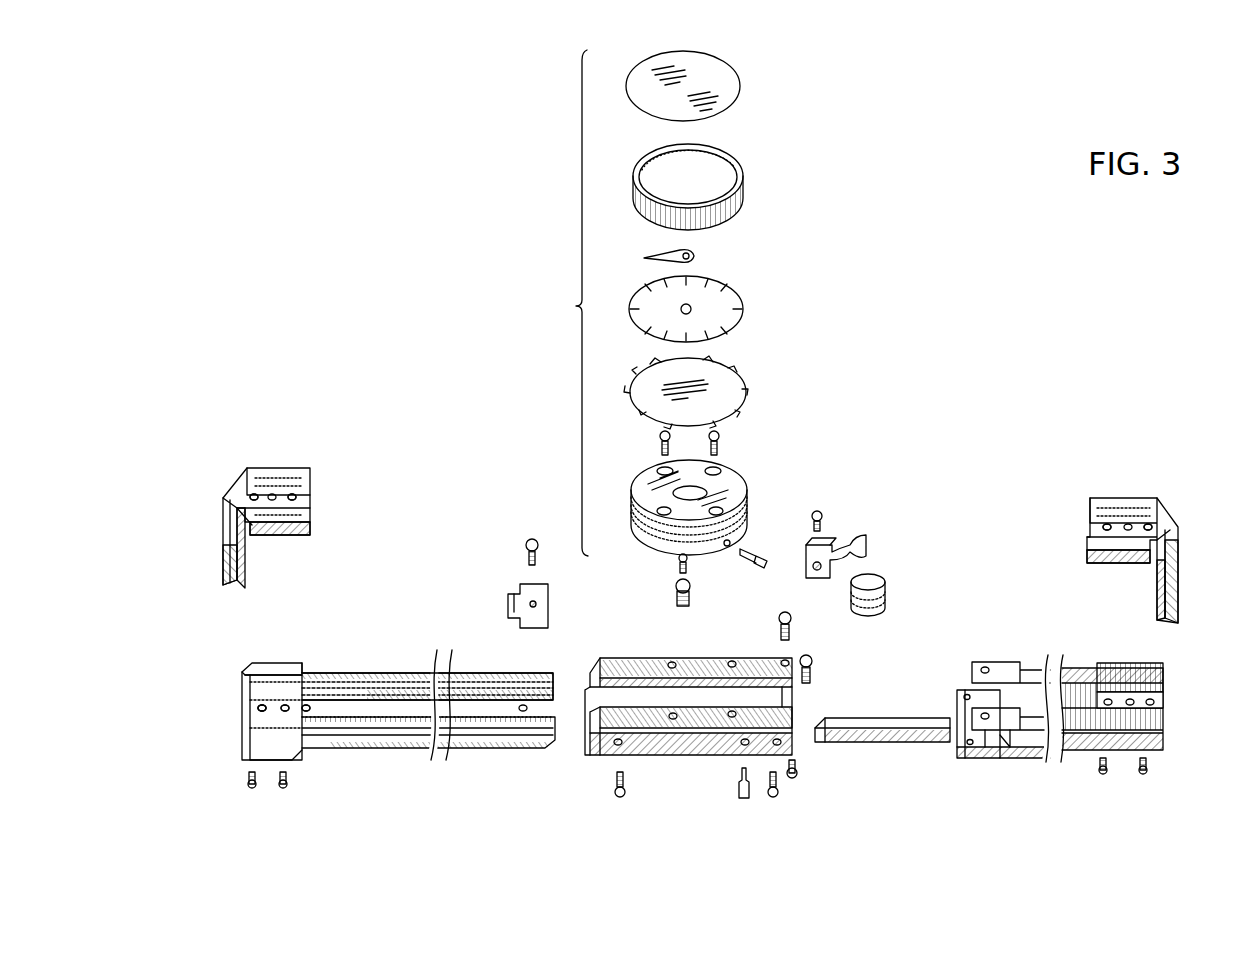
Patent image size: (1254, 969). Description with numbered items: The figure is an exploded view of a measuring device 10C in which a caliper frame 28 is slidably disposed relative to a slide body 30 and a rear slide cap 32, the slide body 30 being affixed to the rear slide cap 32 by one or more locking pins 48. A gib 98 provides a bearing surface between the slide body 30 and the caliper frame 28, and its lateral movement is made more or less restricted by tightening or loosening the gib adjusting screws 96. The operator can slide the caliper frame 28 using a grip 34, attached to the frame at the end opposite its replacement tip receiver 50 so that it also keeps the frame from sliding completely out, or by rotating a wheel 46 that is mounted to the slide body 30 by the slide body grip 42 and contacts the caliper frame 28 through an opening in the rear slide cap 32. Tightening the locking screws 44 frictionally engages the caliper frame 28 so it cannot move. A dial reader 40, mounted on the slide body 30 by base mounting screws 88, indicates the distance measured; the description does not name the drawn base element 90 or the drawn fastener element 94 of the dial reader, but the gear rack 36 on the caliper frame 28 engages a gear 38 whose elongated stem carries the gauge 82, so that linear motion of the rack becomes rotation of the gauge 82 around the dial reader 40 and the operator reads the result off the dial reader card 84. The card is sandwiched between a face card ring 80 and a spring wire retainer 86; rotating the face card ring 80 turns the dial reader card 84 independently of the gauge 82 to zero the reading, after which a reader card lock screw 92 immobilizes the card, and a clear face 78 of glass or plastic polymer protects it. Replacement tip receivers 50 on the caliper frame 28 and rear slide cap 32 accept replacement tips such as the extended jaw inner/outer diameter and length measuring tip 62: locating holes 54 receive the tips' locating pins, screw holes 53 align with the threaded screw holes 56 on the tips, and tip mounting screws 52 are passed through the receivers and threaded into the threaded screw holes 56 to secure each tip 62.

The measuring device 10C is at (863, 302).
The caliper frame 28 is at (400, 748).
The slide body 30 is at (690, 748).
The rear slide cap 32 is at (1042, 676).
The grip 34 is at (510, 602).
The gear rack 36 is at (398, 678).
The gear 38 is at (675, 590).
The dial reader 40 is at (562, 303).
The slide body grip 42 is at (858, 535).
The locking screws 44 is at (744, 802).
The wheel 46 is at (878, 574).
The locking pins 48 is at (779, 624).
The replacement tip receiver 50 is at (250, 708).
The tip mounting screws 52 is at (283, 788).
The screw holes 53 is at (306, 705).
The locating holes 54 is at (285, 712).
The threaded screw holes 56 is at (292, 494).
The extended jaw inner/outer diameter and length measuring tip 62 is at (300, 507).
The clear face 78 is at (740, 66).
The face card ring 80 is at (738, 160).
The gauge 82 is at (696, 253).
The dial reader card 84 is at (742, 295).
The spring wire retainer 86 is at (745, 372).
The base mounting screws 88 is at (658, 438).
The housing 90 is at (735, 470).
The reader card lock screw 92 is at (768, 552).
The screw 94 is at (676, 561).
The gib adjusting screws 96 is at (622, 798).
The gib 98 is at (905, 738).